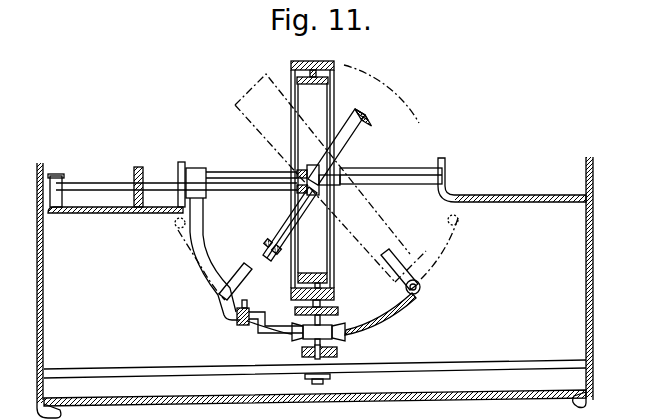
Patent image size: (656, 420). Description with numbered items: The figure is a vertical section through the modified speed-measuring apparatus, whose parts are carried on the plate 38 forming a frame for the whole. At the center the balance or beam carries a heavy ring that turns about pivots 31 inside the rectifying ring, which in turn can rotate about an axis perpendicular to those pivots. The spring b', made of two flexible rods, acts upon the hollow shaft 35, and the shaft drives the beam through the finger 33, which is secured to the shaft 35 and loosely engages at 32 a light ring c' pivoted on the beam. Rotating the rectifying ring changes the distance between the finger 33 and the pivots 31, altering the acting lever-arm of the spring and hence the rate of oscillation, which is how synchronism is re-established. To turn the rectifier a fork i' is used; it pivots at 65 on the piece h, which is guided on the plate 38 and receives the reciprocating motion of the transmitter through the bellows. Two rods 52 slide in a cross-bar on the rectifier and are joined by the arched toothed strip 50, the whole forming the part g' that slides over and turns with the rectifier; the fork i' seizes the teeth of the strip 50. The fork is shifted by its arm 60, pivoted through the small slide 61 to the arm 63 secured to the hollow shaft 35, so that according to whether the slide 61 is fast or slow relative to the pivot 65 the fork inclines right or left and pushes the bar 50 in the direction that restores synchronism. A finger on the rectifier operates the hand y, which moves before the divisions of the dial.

The pivots 31 is at (336, 62).
The light ring c' is at (343, 147).
The spring b' is at (127, 172).
The hollow shaft 35 is at (226, 182).
The plate 38 is at (498, 194).
The engaging point 32 is at (266, 242).
The finger 33 is at (273, 252).
The rods 52 is at (231, 270).
The toothed part g' is at (356, 297).
The arched strip 50 is at (402, 305).
The arm 63 is at (200, 265).
The small slide 61 is at (238, 325).
The arm of the fork 60 is at (258, 333).
The piece h is at (340, 312).
The fork i' is at (347, 330).
The pivot of the fork 65 is at (340, 352).
The hand y is at (331, 378).